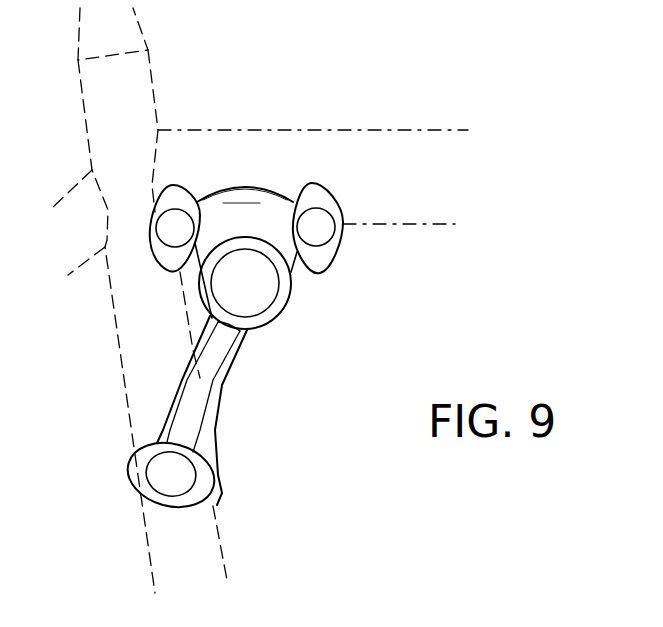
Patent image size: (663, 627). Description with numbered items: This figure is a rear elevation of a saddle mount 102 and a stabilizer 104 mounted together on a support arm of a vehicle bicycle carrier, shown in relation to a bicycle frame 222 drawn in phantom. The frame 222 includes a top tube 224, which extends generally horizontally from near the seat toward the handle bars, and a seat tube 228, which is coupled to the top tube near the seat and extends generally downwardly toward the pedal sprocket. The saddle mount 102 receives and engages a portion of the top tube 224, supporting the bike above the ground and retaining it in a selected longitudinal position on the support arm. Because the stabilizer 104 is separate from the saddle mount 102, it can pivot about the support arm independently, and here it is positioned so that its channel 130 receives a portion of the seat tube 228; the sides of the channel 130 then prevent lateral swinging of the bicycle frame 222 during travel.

The frame 222 is at (227, 55).
The top tube 224 is at (351, 107).
The seat tube 228 is at (227, 580).
The saddle mount 102 is at (255, 180).
The stabilizer 104 is at (238, 363).
The channel 130 is at (217, 500).